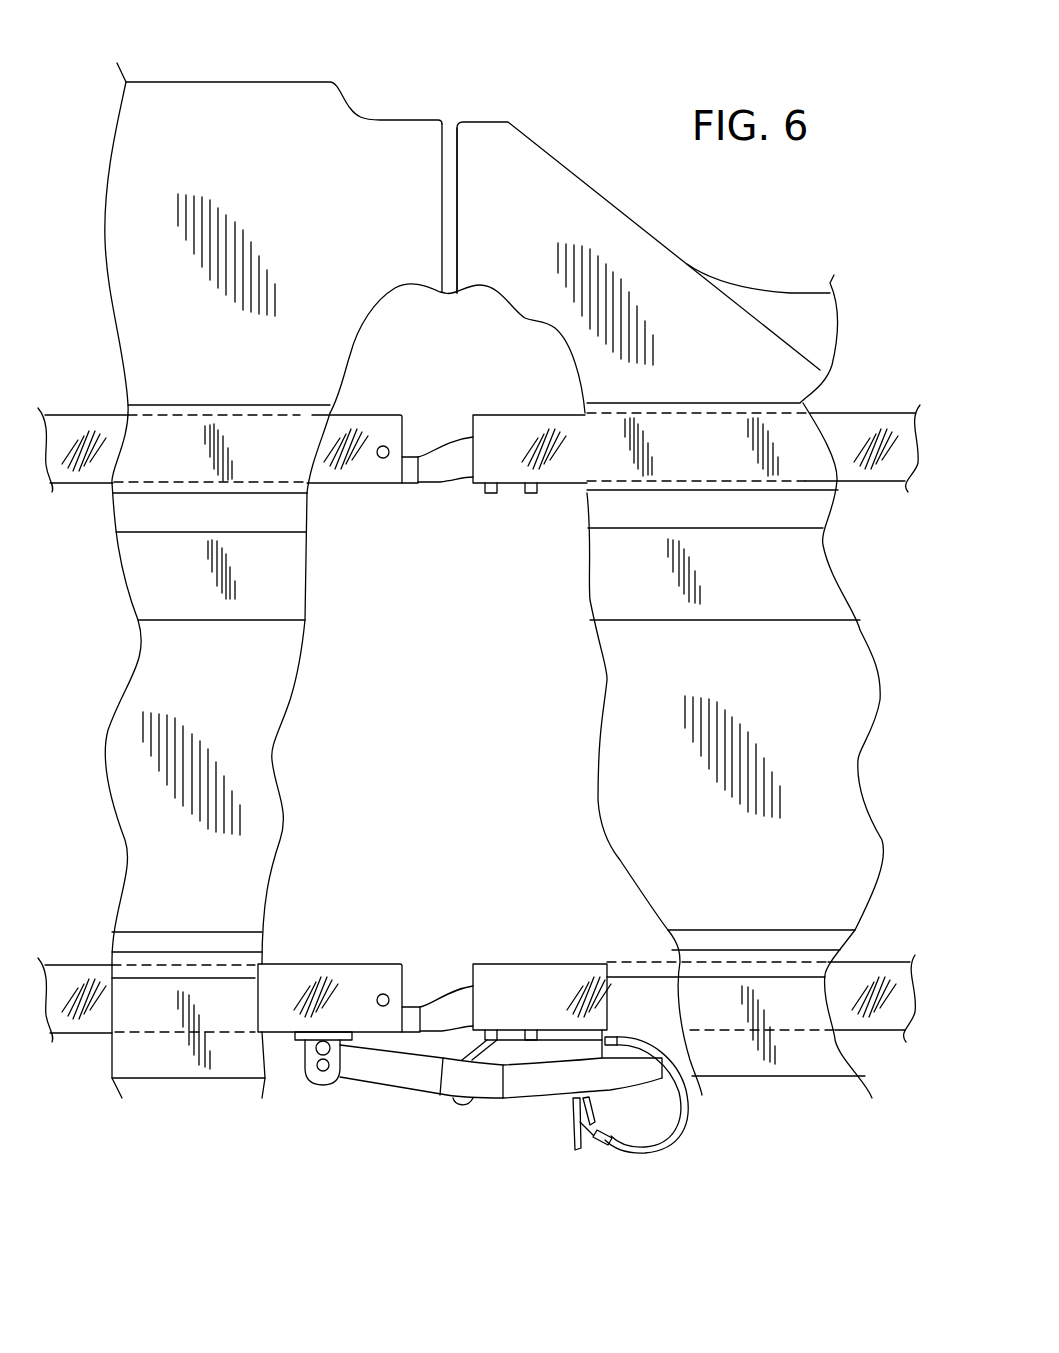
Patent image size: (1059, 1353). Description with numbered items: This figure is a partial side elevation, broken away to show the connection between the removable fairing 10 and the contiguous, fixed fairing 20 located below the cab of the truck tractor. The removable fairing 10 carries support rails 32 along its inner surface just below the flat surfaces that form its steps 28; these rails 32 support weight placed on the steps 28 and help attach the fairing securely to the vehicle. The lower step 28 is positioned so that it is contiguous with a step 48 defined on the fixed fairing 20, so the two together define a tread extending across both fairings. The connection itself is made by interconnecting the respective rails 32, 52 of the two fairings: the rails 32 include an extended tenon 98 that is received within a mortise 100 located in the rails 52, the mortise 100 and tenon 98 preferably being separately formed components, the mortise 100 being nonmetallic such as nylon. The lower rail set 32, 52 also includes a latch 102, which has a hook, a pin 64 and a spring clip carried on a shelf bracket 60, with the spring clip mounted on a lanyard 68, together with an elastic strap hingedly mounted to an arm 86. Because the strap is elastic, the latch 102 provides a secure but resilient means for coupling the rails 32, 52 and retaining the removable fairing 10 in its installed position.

The removable fairing 10 is at (569, 170).
The fixed fairing 20 is at (275, 82).
The steps 28 is at (818, 930).
The support rails 32 is at (520, 413).
The step 48 is at (180, 932).
The rails 52 is at (348, 485).
The shelf bracket 60 is at (578, 1147).
The pin 64 is at (573, 1100).
The lanyard 68 is at (672, 1146).
The arm 86 is at (515, 1097).
The tenon 98 is at (448, 483).
The mortise 100 is at (410, 487).
The latch 102 is at (467, 1122).